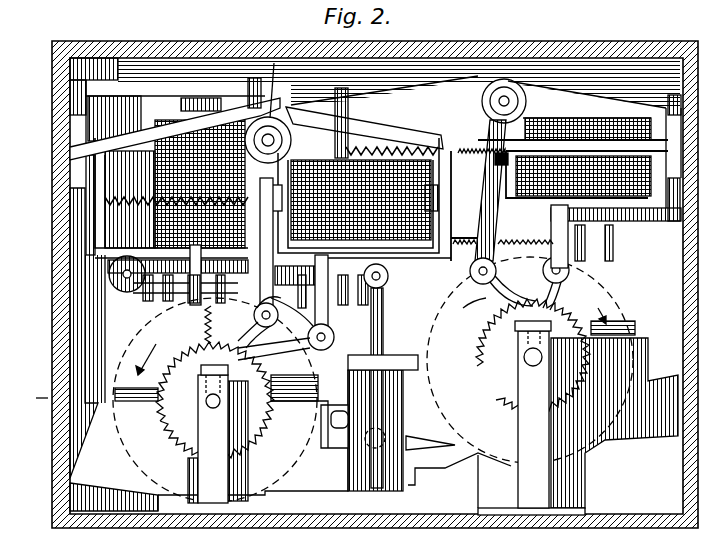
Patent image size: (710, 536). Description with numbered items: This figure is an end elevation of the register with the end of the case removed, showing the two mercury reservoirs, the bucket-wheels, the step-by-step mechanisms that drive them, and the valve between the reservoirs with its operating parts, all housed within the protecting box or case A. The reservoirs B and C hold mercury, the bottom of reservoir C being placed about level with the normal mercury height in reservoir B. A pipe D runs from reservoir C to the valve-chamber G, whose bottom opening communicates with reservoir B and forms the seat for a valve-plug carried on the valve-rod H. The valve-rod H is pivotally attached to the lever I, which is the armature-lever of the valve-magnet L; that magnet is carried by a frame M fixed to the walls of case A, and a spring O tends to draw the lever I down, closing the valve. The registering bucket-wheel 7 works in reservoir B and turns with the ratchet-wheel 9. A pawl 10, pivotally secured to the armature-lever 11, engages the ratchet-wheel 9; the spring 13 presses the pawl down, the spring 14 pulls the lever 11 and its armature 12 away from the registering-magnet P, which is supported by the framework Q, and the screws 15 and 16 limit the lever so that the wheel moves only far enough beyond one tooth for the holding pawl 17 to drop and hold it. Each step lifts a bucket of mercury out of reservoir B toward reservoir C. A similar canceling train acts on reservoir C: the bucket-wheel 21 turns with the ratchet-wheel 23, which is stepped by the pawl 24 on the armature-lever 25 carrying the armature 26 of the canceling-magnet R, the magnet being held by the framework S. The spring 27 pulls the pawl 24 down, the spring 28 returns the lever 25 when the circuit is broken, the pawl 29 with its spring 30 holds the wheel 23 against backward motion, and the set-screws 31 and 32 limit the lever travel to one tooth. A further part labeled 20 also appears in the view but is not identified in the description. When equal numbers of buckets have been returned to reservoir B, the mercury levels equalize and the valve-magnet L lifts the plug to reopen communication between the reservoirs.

The registering bucket-wheel 7 is at (152, 352).
The ratchet-wheel 9 is at (204, 434).
The pawl 10 is at (252, 335).
The armature-lever 11 is at (268, 245).
The armature 12 is at (258, 187).
The spring 13 is at (238, 320).
The spring 14 is at (176, 184).
The screw 15 is at (211, 275).
The screw 16 is at (275, 312).
The pawl 17 is at (286, 331).
The detent lug 20 is at (333, 402).
The bucket-wheel 21 is at (595, 307).
The ratchet-wheel 23 is at (522, 414).
The pawl 24 is at (478, 304).
The armature-lever 25 is at (498, 190).
The armature 26 is at (479, 205).
The spring 27 is at (502, 282).
The spring 28 is at (365, 138).
The pawl 29 is at (551, 283).
The spring 30 is at (575, 262).
The set-screw 31 is at (525, 233).
The set-screw 32 is at (464, 233).
The box or case A is at (32, 398).
The reservoir B is at (215, 400).
The reservoir C is at (530, 360).
The pipe D is at (432, 456).
The valve-chamber G is at (340, 432).
The valve-rod H is at (381, 376).
The lever I is at (295, 267).
The valve-magnet L is at (261, 121).
The frame M is at (175, 119).
The spring O is at (198, 324).
The registering-magnet P is at (303, 152).
The framework Q is at (382, 112).
The canceling-magnet R is at (587, 99).
The framework S is at (470, 84).